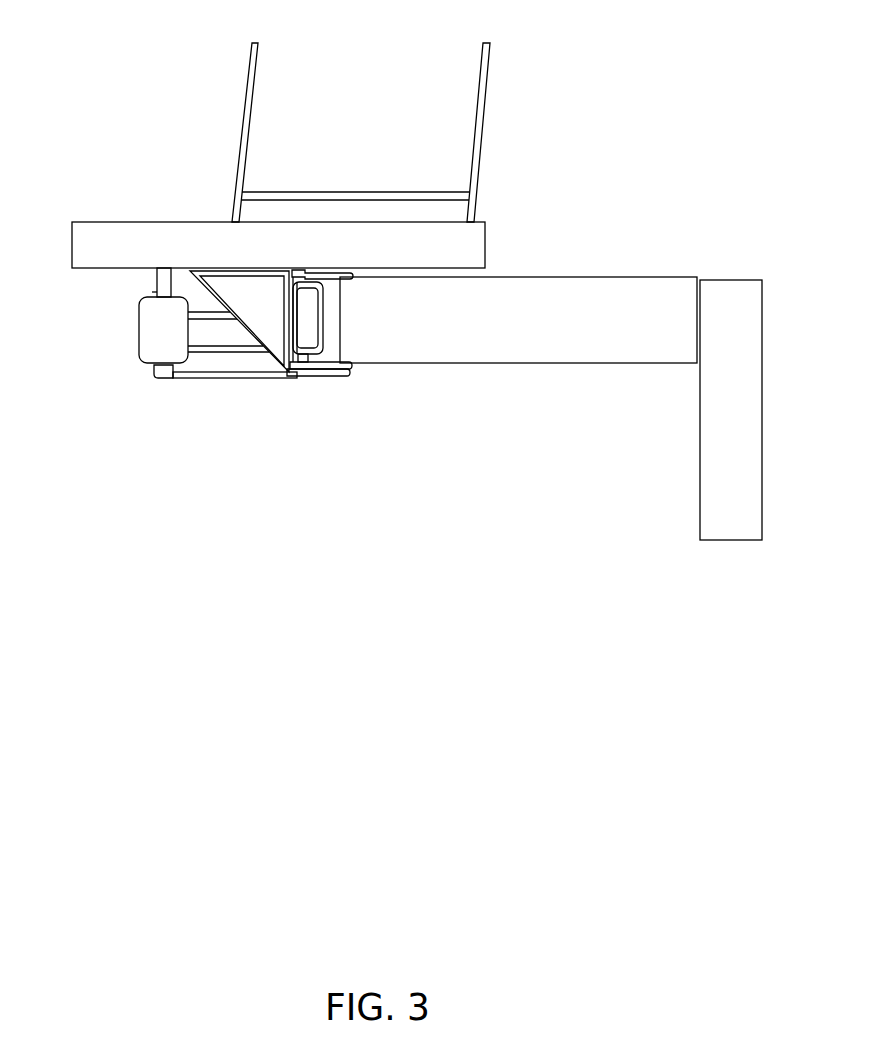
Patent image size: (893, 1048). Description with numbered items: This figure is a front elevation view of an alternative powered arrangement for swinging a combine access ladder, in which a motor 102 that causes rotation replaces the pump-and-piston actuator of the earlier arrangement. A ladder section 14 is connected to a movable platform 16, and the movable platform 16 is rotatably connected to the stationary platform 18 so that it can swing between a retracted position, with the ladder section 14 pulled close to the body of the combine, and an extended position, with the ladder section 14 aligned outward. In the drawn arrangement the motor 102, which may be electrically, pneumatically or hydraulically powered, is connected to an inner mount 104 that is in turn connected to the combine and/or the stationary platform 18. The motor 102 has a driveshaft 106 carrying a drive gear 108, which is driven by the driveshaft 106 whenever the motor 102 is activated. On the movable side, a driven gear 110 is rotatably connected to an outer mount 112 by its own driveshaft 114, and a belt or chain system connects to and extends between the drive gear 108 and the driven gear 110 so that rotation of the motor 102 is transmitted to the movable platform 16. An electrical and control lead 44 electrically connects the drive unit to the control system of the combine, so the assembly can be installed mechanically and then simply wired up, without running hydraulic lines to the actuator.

The ladder section 14 is at (738, 302).
The movable platform 16 is at (585, 295).
The stationary platform 18 is at (92, 235).
The electrical and control lead 44 is at (152, 292).
The motor 102 is at (148, 343).
The inner mount 104 is at (163, 278).
The driveshaft 106 is at (153, 368).
The drive gear 108 is at (160, 371).
The driven gear 110 is at (348, 375).
The outer mount 112 is at (352, 270).
The driveshaft 114 is at (318, 369).